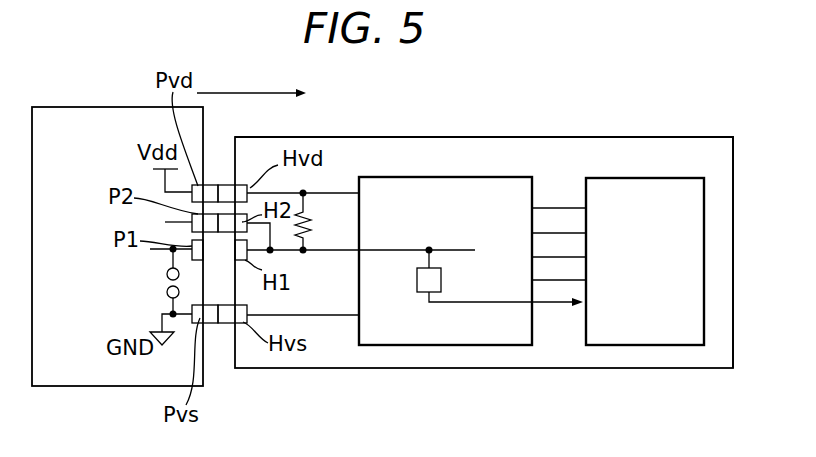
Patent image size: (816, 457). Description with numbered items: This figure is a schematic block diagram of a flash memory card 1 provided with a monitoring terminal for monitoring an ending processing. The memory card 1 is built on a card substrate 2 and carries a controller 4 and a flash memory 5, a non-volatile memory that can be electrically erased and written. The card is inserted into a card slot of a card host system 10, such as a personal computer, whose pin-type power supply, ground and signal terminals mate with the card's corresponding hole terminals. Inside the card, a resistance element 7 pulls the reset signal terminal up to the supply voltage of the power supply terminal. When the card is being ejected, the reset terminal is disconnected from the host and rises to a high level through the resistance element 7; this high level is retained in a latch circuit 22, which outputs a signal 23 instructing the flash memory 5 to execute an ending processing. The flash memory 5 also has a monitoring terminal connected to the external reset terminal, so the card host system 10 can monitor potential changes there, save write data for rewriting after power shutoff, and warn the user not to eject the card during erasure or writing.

The flash memory card 1 is at (728, 131).
The card substrate 2 is at (730, 330).
The controller 4 is at (453, 335).
The flash memory 5 is at (633, 328).
The resistance element 7 is at (308, 218).
The card host system 10 is at (58, 384).
The latch circuit 22 is at (441, 280).
The signal 23 is at (547, 305).